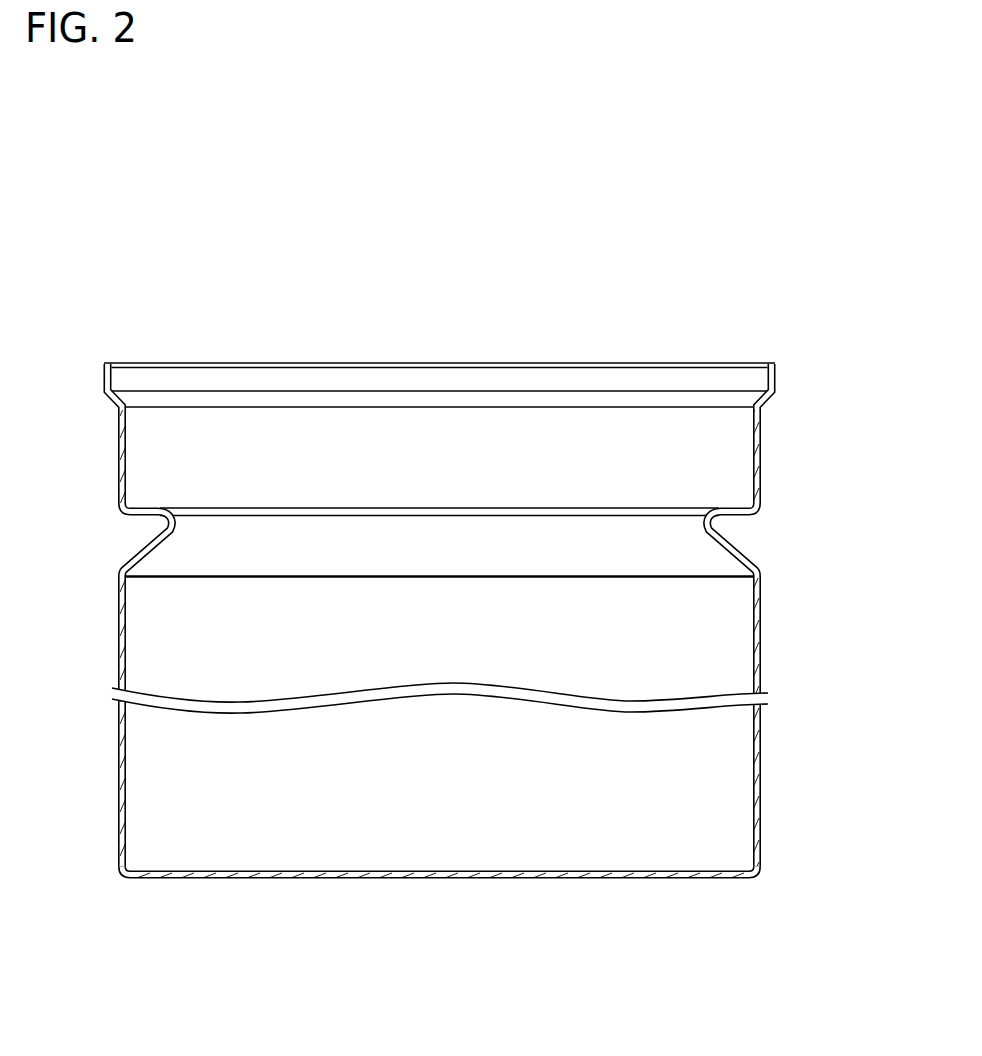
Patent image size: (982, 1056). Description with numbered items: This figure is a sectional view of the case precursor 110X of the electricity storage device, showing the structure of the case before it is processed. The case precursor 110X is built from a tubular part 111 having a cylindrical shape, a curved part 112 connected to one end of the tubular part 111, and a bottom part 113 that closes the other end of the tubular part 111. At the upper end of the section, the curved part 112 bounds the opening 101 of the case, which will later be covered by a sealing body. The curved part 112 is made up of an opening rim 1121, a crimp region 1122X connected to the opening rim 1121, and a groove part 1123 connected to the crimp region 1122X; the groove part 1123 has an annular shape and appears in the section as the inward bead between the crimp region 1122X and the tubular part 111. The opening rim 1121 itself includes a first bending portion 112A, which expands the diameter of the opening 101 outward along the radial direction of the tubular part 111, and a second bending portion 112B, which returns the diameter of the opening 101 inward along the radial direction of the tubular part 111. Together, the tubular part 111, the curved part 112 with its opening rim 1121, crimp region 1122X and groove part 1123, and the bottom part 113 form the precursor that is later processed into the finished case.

The opening 101 is at (270, 308).
The case precursor 110X is at (608, 273).
The tubular part 111 is at (761, 735).
The curved part 112 is at (848, 392).
The first bending portion 112A is at (115, 410).
The second bending portion 112B is at (104, 399).
The opening rim 1121 is at (776, 383).
The crimp region 1122X is at (762, 446).
The groove part 1123 is at (768, 575).
The bottom part 113 is at (712, 879).